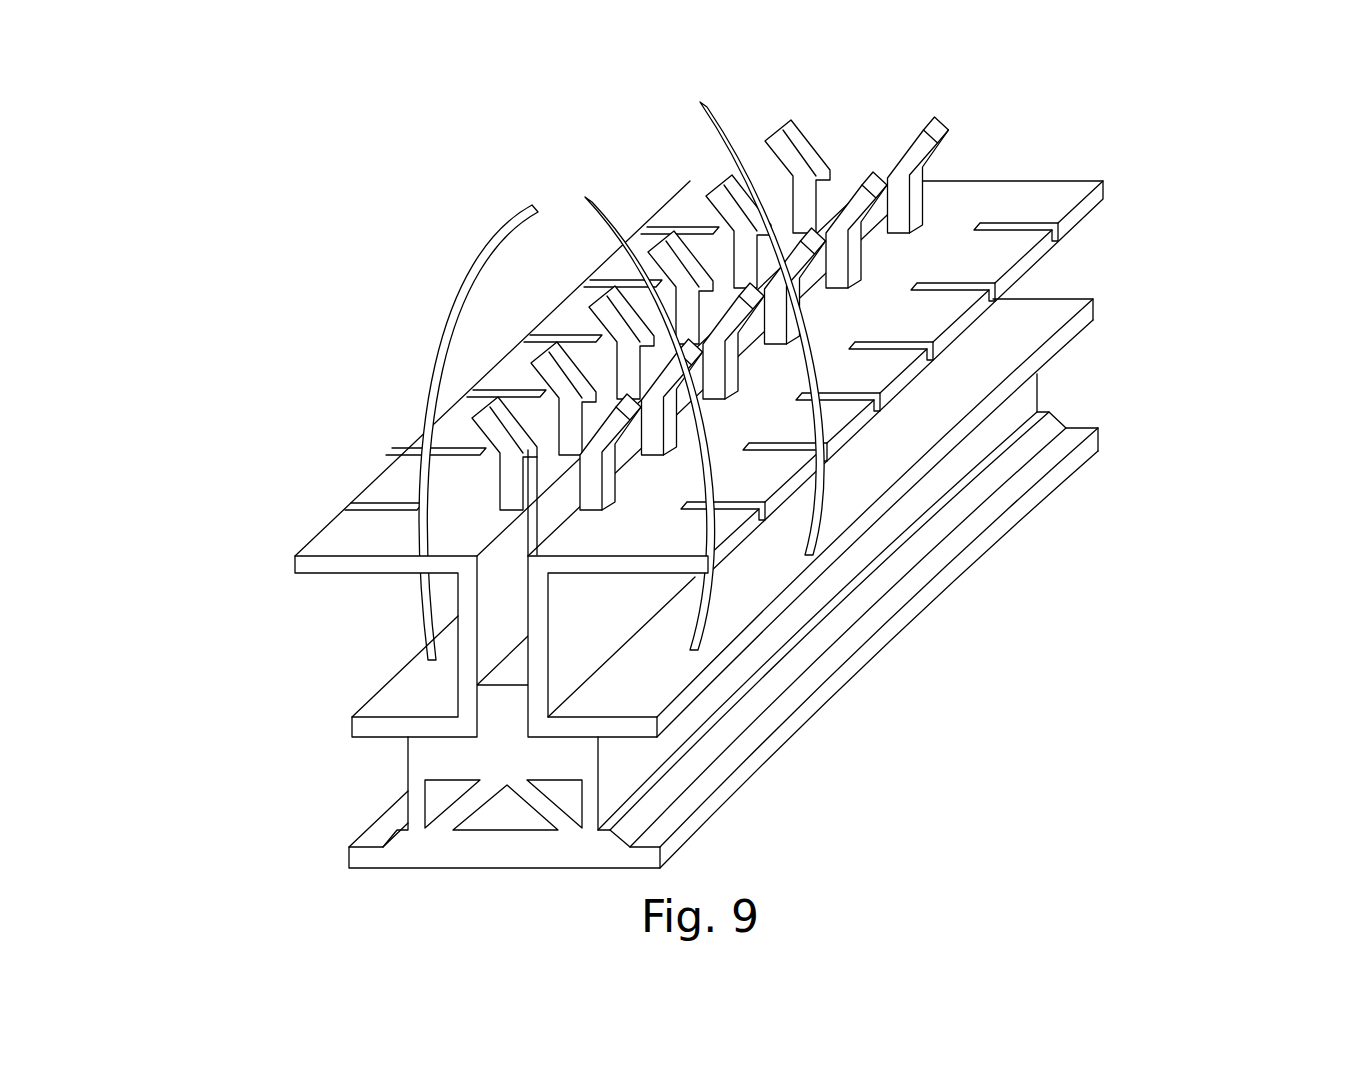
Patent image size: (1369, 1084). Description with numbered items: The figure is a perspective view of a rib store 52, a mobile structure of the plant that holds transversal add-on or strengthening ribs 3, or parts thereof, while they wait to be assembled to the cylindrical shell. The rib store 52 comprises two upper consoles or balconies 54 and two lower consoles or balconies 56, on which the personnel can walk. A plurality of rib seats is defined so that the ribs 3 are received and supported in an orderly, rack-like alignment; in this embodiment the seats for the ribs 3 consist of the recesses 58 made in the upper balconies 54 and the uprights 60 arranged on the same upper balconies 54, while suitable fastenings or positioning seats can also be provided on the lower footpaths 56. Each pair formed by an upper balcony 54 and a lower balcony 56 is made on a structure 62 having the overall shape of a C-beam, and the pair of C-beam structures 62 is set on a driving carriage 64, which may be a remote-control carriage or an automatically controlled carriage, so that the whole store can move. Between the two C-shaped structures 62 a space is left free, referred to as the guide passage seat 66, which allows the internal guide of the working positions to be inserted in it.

The transversal add-on or strengthening rib 3 is at (612, 204).
The rib store 52 is at (731, 470).
The upper console or balcony 54 is at (702, 347).
The lower console or balcony 56 is at (609, 585).
The recess 58 is at (1030, 227).
The upright 60 is at (678, 242).
The C-beam structure 62 is at (457, 598).
The driving carriage 64 is at (408, 770).
The guide passage seat 66 is at (498, 563).